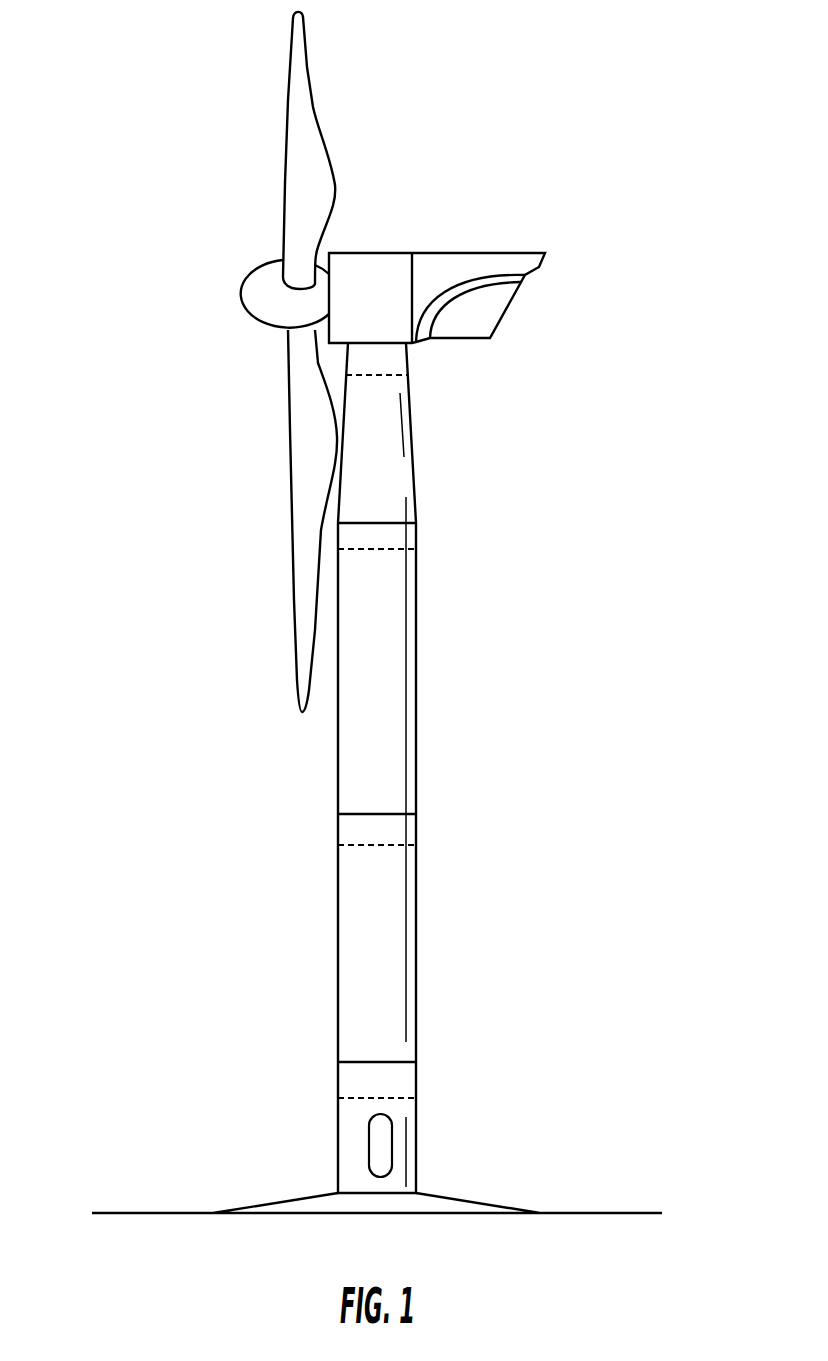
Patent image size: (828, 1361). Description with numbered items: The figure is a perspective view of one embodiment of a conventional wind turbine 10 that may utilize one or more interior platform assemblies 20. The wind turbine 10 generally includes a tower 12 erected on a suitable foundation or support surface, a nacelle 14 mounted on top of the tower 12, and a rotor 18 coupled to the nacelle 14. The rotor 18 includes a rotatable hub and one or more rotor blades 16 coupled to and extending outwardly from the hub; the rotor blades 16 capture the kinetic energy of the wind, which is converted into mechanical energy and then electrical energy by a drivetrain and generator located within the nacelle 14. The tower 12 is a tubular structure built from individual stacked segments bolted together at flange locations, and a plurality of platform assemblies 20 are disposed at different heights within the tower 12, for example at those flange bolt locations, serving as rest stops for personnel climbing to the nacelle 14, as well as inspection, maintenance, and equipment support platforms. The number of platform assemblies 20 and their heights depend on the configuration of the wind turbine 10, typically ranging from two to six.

The wind turbine 10 is at (158, 130).
The tower 12 is at (357, 878).
The nacelle 14 is at (397, 273).
The rotor blades 16 is at (303, 525).
The rotor 18 is at (263, 290).
The platform assemblies 20 is at (388, 375).